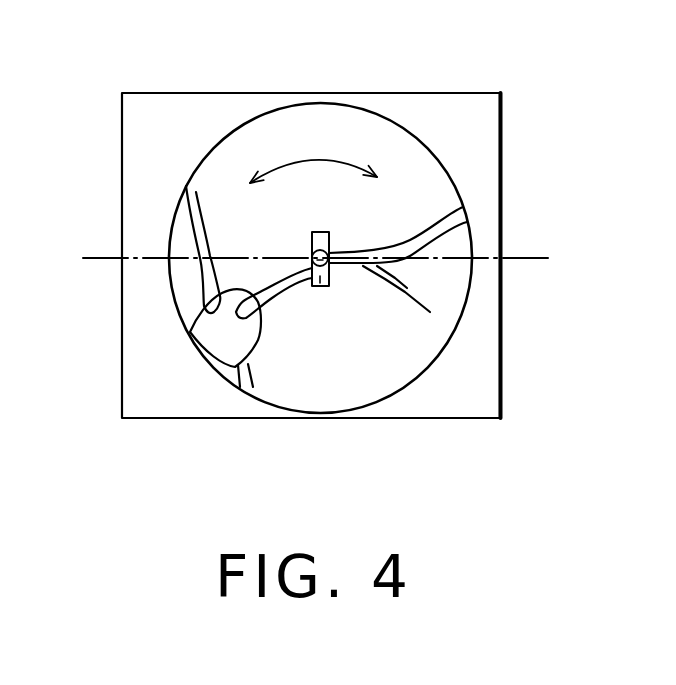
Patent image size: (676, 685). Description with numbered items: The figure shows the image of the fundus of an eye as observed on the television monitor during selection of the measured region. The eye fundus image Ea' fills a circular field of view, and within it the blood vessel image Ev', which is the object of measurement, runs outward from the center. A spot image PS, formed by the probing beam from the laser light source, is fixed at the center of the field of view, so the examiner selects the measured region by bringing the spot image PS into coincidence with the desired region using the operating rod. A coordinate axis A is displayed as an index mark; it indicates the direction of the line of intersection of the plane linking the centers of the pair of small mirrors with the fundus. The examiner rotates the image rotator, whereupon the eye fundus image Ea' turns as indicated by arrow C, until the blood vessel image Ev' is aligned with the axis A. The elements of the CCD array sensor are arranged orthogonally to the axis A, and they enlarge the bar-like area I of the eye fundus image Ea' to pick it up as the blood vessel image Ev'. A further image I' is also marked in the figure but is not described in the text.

The eye fundus image Ea' is at (249, 203).
The blood vessel image Ev' is at (398, 166).
The measuring light spot image I' is at (194, 202).
The bar-like area I is at (309, 390).
The spot image PS is at (328, 280).
The arrow C is at (313, 152).
The axis A is at (333, 260).